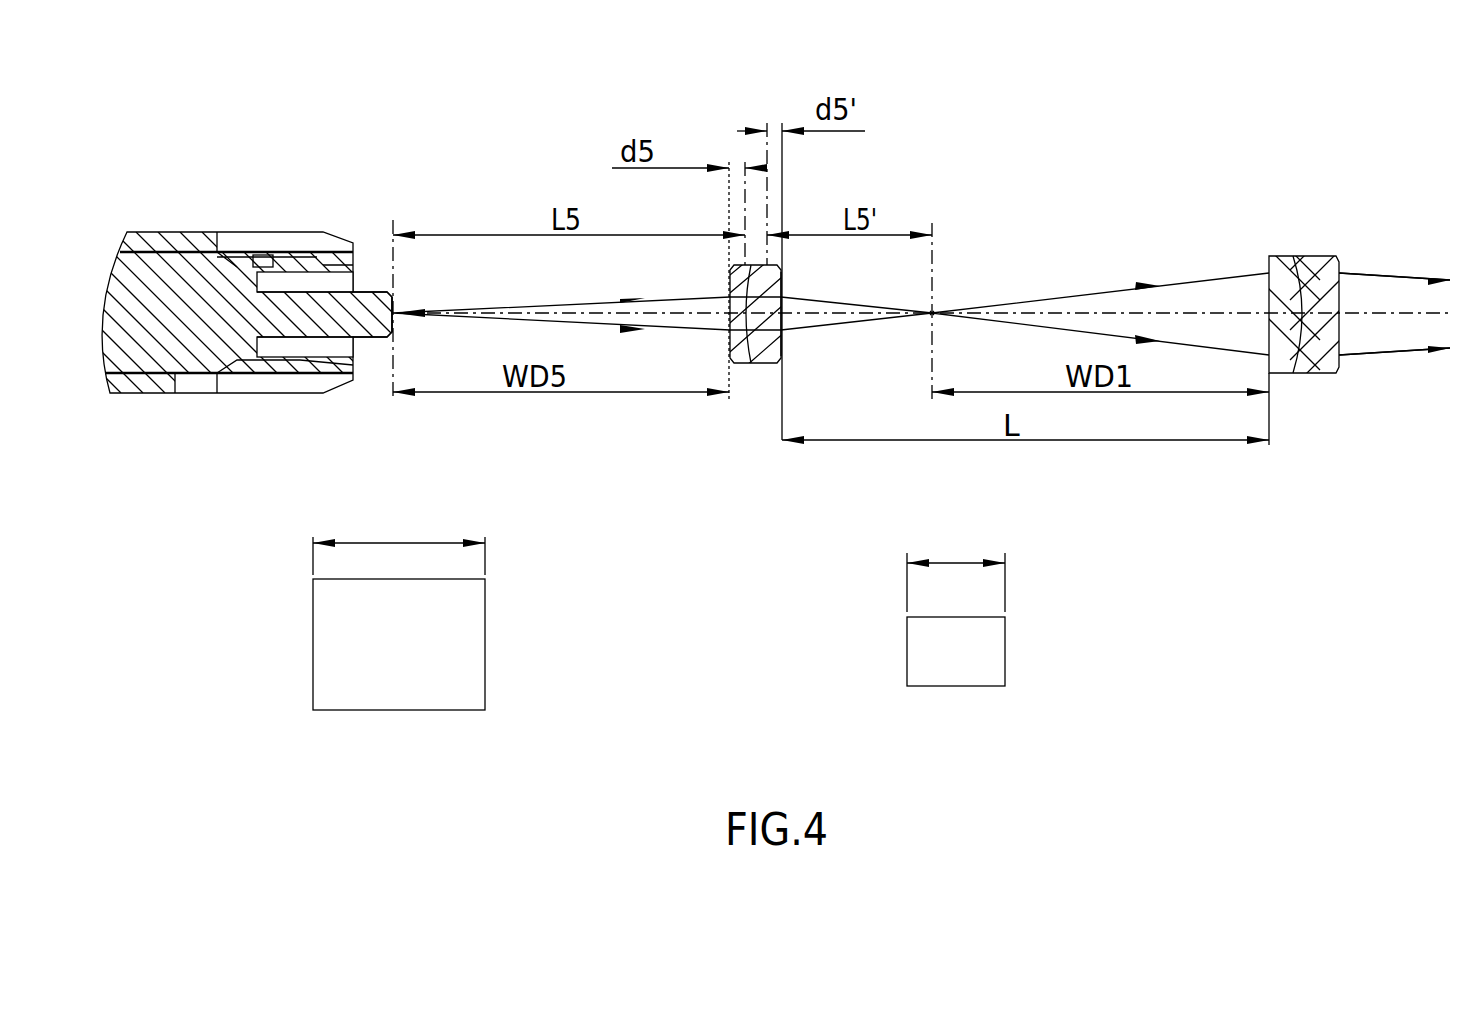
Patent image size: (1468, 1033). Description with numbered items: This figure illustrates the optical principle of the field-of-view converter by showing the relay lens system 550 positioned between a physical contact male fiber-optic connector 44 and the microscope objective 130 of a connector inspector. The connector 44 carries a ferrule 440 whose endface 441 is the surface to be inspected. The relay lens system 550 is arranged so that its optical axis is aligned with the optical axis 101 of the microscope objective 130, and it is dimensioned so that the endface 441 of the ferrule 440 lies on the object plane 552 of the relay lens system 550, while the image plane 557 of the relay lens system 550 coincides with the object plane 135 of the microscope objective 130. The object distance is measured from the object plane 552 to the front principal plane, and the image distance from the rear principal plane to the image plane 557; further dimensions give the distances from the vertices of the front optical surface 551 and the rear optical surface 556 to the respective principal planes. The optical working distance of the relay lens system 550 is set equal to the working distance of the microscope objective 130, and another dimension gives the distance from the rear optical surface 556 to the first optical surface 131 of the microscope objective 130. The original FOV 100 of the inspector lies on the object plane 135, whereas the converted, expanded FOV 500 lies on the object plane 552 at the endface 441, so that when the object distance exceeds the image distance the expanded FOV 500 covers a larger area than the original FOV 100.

The PC male connector 44 is at (193, 283).
The ferrule 440 is at (310, 328).
The endface 441 is at (395, 322).
The object plane 552 is at (393, 312).
The relay lens system 550 is at (758, 363).
The front optical surface 551 is at (727, 300).
The rear optical surface 556 is at (783, 333).
The image plane 557 is at (932, 230).
The object plane 135 is at (933, 285).
The microscope objective 130 is at (1310, 262).
The first optical surface 131 is at (1270, 287).
The optical axis 101 is at (1402, 317).
The expanded FOV 500 is at (430, 710).
The FOV 100 is at (977, 686).